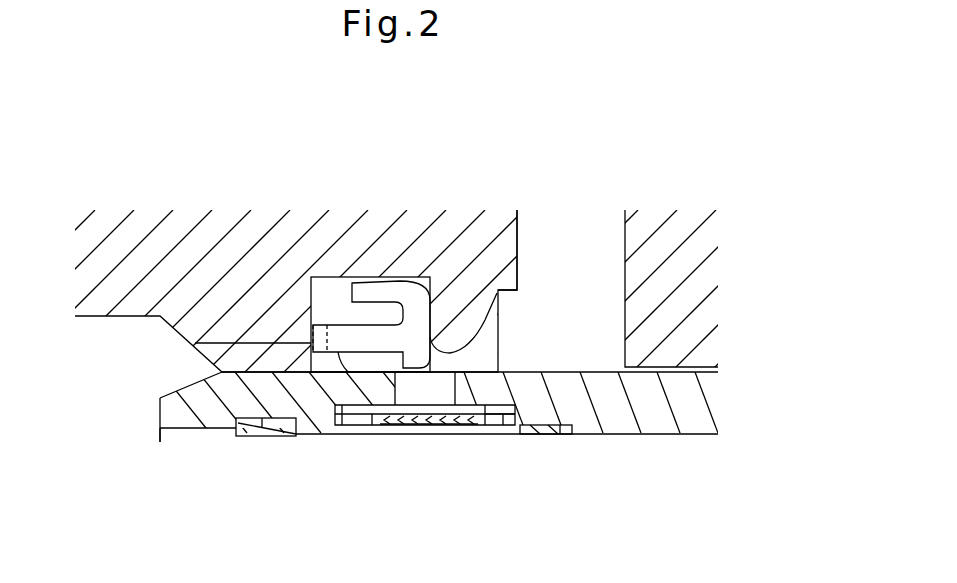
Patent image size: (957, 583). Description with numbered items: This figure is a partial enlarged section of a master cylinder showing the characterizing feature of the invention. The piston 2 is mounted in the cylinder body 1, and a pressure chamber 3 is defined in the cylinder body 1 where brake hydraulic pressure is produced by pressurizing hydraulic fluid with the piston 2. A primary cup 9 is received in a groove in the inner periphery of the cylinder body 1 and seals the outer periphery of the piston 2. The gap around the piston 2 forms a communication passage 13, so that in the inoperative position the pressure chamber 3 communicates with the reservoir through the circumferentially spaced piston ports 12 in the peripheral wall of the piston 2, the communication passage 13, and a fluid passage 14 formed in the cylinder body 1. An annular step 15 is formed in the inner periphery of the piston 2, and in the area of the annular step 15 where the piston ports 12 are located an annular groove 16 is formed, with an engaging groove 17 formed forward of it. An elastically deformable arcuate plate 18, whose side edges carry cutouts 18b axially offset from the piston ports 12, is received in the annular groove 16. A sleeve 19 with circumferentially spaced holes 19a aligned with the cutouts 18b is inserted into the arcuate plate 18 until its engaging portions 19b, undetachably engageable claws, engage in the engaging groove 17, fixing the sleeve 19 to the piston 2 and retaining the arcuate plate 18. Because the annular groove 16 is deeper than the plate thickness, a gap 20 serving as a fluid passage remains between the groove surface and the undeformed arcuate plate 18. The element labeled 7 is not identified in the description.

The cylinder body 1 is at (685, 300).
The piston 2 is at (687, 435).
The pressure chamber 3 is at (135, 393).
The end portion 7 is at (162, 433).
The primary cup 9 is at (380, 282).
The piston ports 12 is at (331, 427).
The communication passage 13 is at (458, 363).
The fluid passage 14 is at (583, 252).
The annular step 15 is at (553, 425).
The annular groove 16 is at (484, 408).
The engaging groove 17 is at (292, 430).
The arcuate plate 18 is at (427, 428).
The cutouts 18b is at (500, 412).
The sleeve 19 is at (295, 440).
The holes 19a is at (378, 428).
The engaging portions 19b is at (237, 440).
The gap 20 is at (458, 410).